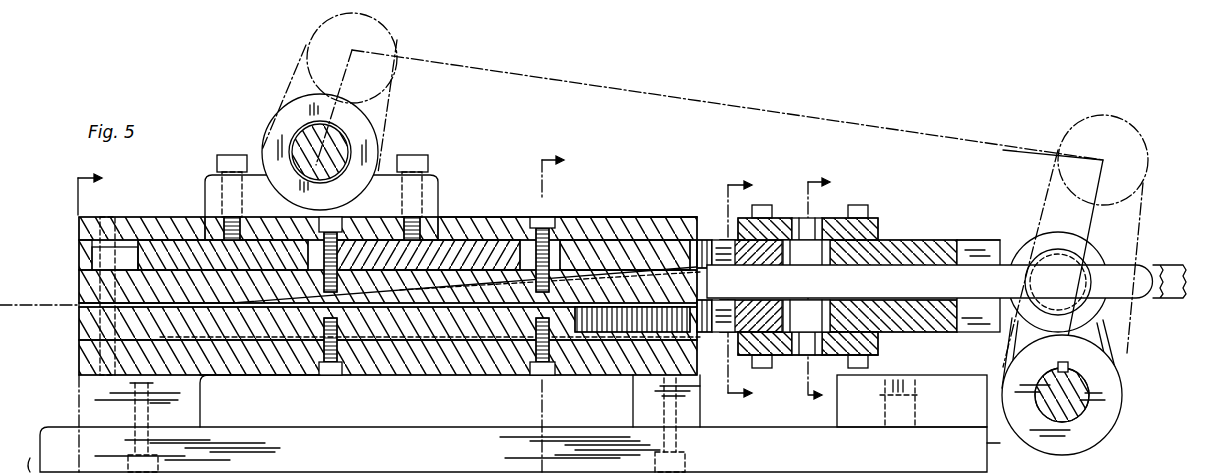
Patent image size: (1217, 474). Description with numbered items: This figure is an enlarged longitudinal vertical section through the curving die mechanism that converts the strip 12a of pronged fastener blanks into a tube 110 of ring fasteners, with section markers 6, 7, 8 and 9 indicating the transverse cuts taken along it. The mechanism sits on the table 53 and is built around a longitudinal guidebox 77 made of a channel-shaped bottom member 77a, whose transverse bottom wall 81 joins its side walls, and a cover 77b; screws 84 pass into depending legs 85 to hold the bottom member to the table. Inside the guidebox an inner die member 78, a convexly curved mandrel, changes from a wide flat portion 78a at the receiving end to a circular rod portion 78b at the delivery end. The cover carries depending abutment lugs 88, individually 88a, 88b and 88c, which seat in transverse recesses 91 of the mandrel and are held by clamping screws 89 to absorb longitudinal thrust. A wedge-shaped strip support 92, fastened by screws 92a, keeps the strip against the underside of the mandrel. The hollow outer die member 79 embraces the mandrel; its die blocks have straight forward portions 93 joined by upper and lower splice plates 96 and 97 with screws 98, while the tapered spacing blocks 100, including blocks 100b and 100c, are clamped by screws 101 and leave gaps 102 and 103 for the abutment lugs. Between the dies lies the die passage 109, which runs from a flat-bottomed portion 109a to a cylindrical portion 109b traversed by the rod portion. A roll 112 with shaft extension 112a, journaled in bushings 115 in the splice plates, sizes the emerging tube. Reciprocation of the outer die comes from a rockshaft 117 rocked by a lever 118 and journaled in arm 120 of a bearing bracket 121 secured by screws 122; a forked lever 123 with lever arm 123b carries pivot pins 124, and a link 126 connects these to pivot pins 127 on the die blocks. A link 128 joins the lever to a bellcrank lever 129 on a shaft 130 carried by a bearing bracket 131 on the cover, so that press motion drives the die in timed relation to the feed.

The section line 6- 6 is at (96, 192).
The section line 7- 7 is at (559, 175).
The section line 8- 8 is at (746, 290).
The section line 9- 9 is at (825, 290).
The strip of fastener blanks 12a is at (57, 304).
The table 53 is at (508, 427).
The longitudinal guidebox 77 is at (350, 376).
The channel-shaped bottom member 77a is at (424, 380).
The cover 77b is at (610, 217).
The inner die member 78 is at (455, 245).
The flat portion 78a is at (115, 312).
The rod portion 78b is at (985, 240).
The outer die member 79 is at (492, 248).
The bottom wall 81 is at (268, 376).
The screws 84 is at (155, 412).
The depending legs 85 is at (208, 384).
The abutment lugs 88 is at (110, 257).
The abutment lug 88a is at (158, 238).
The abutment lug 88b is at (366, 190).
The abutment lug 88c is at (568, 240).
The clamping screws 89 is at (245, 178).
The transverse recesses 91 is at (318, 288).
The strip support 92 is at (388, 357).
The screws 92a is at (353, 346).
The straight portions 93 is at (880, 267).
The upper splice plate 96 is at (868, 262).
The lower splice plate 97 is at (880, 353).
The screws 98 is at (870, 240).
The tapered arbor 100 is at (447, 284).
The tapered spacing block 100b is at (427, 267).
The tapered spacing block 100c is at (550, 287).
The screws 101 is at (223, 255).
The gap 102 is at (220, 232).
The gap 103 is at (625, 255).
The longitudinal die passage 109 is at (490, 324).
The passage portion 109a is at (424, 322).
The cylindrical passage portion 109b is at (630, 306).
The tube 110 is at (1105, 262).
The roll 112 is at (865, 222).
The shaft extension 112a is at (792, 218).
The bushings 115 is at (833, 230).
The rockshaft 117 is at (1085, 392).
The lever 118 is at (1125, 206).
The arm 120 is at (998, 448).
The bearing bracket 121 is at (925, 385).
The screws 122 is at (880, 440).
The forked lever 123 is at (1105, 418).
The lever arm 123b is at (1108, 330).
The pivot pins 124 is at (1085, 237).
The link 126 is at (960, 245).
The pivot pins 127 is at (978, 318).
The link 128 is at (727, 105).
The bellcrank lever 129 is at (400, 105).
The shaft 130 is at (302, 142).
The bearing bracket 131 is at (428, 178).